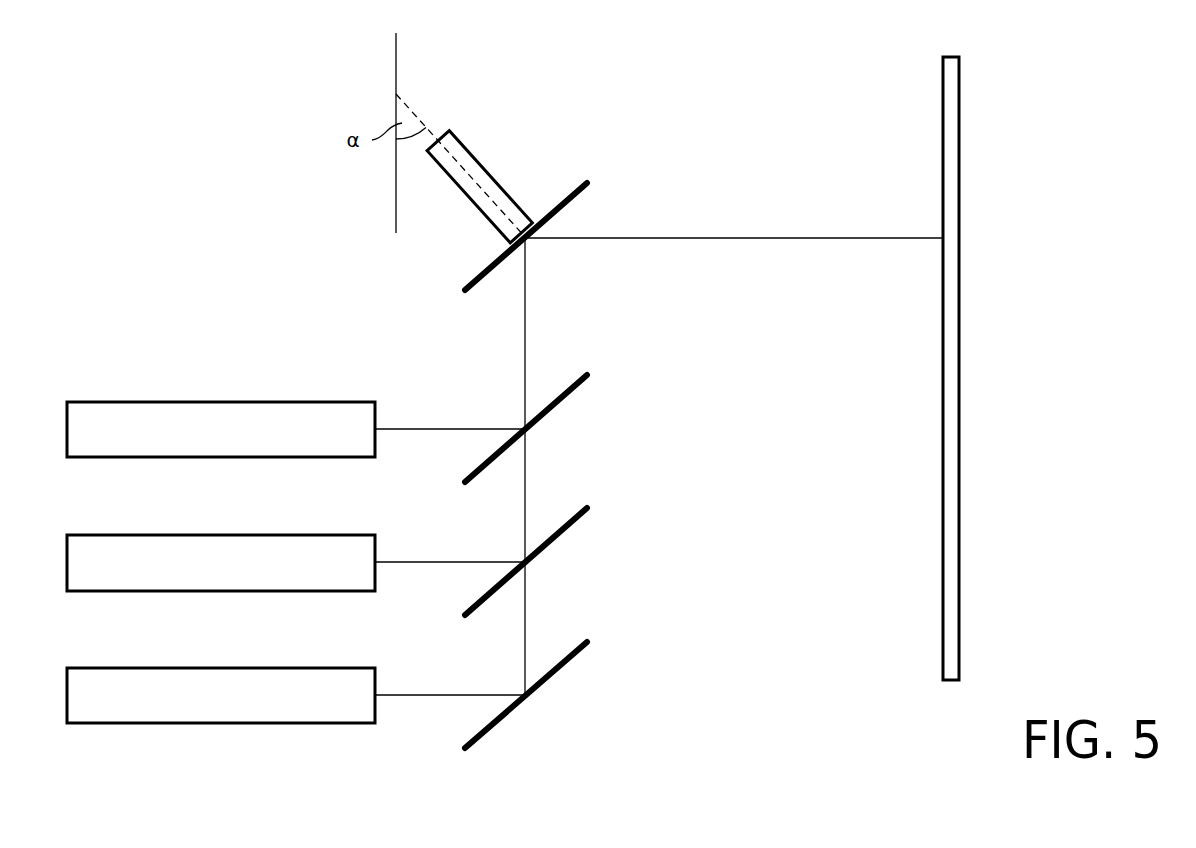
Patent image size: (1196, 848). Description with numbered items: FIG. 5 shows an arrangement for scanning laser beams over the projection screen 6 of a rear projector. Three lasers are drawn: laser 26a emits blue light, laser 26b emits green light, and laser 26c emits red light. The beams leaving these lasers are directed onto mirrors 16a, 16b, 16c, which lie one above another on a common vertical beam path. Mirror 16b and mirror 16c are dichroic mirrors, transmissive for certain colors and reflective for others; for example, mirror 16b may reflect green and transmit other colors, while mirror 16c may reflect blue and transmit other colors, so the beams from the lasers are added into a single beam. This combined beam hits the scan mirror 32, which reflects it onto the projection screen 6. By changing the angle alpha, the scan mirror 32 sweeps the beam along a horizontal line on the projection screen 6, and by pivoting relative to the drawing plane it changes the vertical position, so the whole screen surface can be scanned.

The projection screen 6 is at (955, 54).
The scan mirror 32 is at (495, 178).
The laser 26a is at (88, 400).
The laser 26b is at (88, 533).
The laser 26c is at (88, 667).
The mirror 16a is at (580, 652).
The mirror 16b is at (580, 517).
The mirror 16c is at (580, 385).